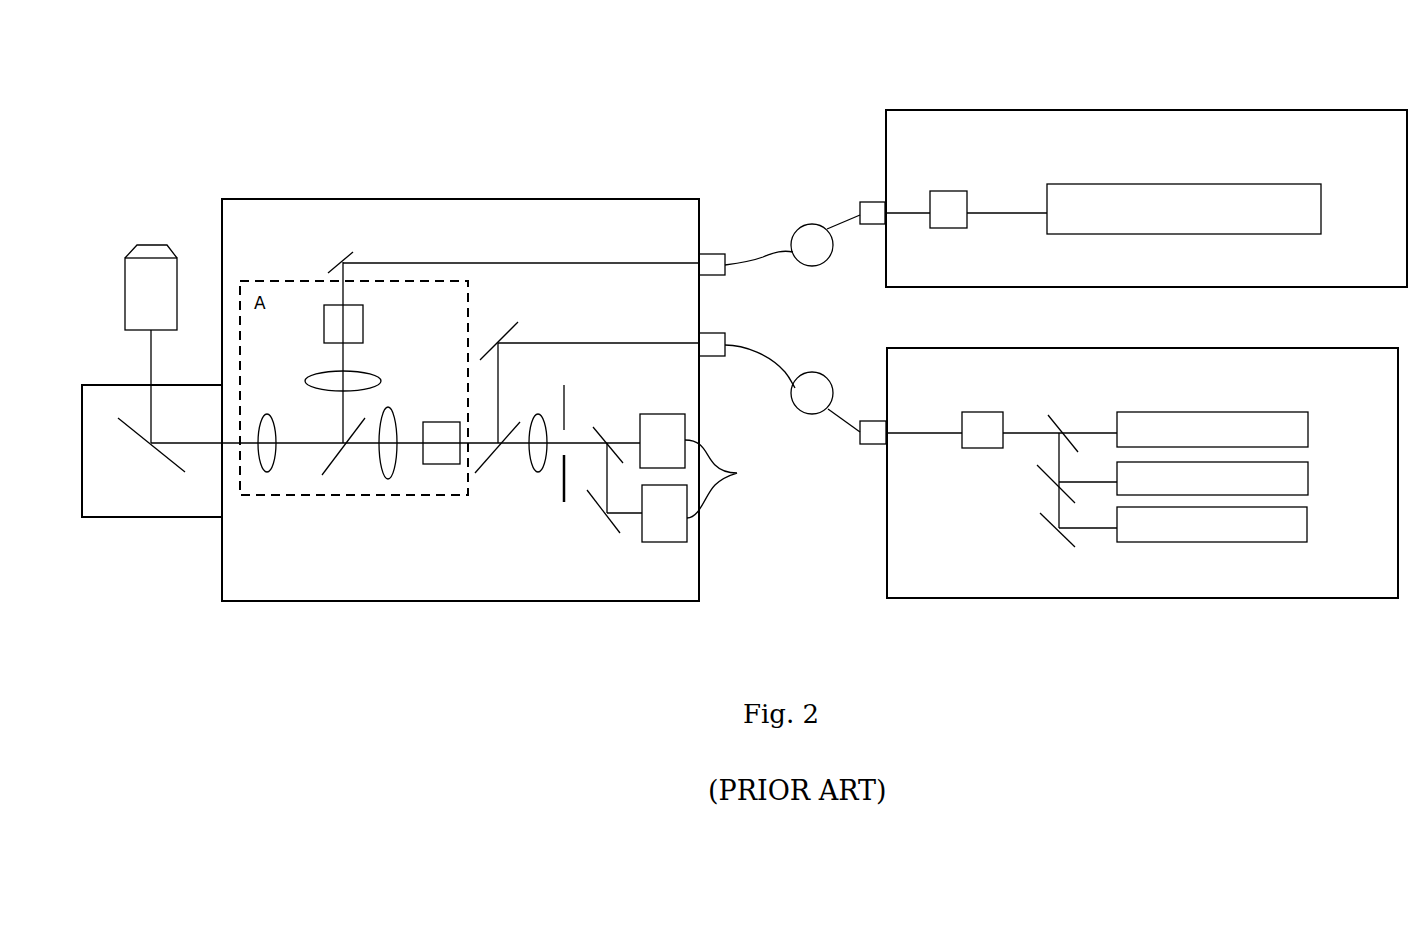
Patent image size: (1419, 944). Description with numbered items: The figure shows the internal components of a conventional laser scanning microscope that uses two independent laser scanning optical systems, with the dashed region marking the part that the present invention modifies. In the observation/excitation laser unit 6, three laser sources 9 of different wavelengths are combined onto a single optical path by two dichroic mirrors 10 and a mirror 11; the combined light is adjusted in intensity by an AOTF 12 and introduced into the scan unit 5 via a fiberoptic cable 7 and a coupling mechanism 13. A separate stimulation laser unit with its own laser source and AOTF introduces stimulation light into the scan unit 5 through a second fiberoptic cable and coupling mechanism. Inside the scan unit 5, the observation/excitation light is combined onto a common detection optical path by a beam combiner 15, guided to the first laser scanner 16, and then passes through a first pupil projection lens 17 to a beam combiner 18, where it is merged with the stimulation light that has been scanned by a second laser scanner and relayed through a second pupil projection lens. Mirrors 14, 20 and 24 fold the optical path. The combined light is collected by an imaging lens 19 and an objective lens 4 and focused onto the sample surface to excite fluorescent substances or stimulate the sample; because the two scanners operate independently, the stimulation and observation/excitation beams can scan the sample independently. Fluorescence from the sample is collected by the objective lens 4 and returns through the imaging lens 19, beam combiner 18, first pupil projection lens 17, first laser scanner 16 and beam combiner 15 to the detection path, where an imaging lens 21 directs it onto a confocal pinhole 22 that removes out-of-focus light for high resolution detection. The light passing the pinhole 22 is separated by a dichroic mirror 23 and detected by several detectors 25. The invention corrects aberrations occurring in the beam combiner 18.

The objective lens 4 is at (125, 298).
The scan unit 5 is at (347, 198).
The observation/excitation laser unit 6 is at (1193, 598).
The fiberoptic cable 7 is at (827, 415).
The laser source 9 is at (1308, 430).
The dichroic mirror 10 is at (1052, 487).
The mirror 11 is at (1052, 527).
The AOTF 12 is at (973, 448).
The coupling mechanism 13 is at (712, 356).
The mirror 14 is at (508, 340).
The beam combiner 15 is at (488, 448).
The first laser scanner 16 is at (447, 464).
The first pupil projection lens 17 is at (388, 480).
The beam combiner 18 is at (322, 475).
The imaging lens 19 is at (267, 472).
The mirror 20 is at (185, 472).
The imaging lens 21 is at (543, 473).
The confocal pinhole 22 is at (564, 508).
The dichroic mirror 23 is at (600, 428).
The mirror 24 is at (603, 517).
The detectors 25 is at (728, 479).